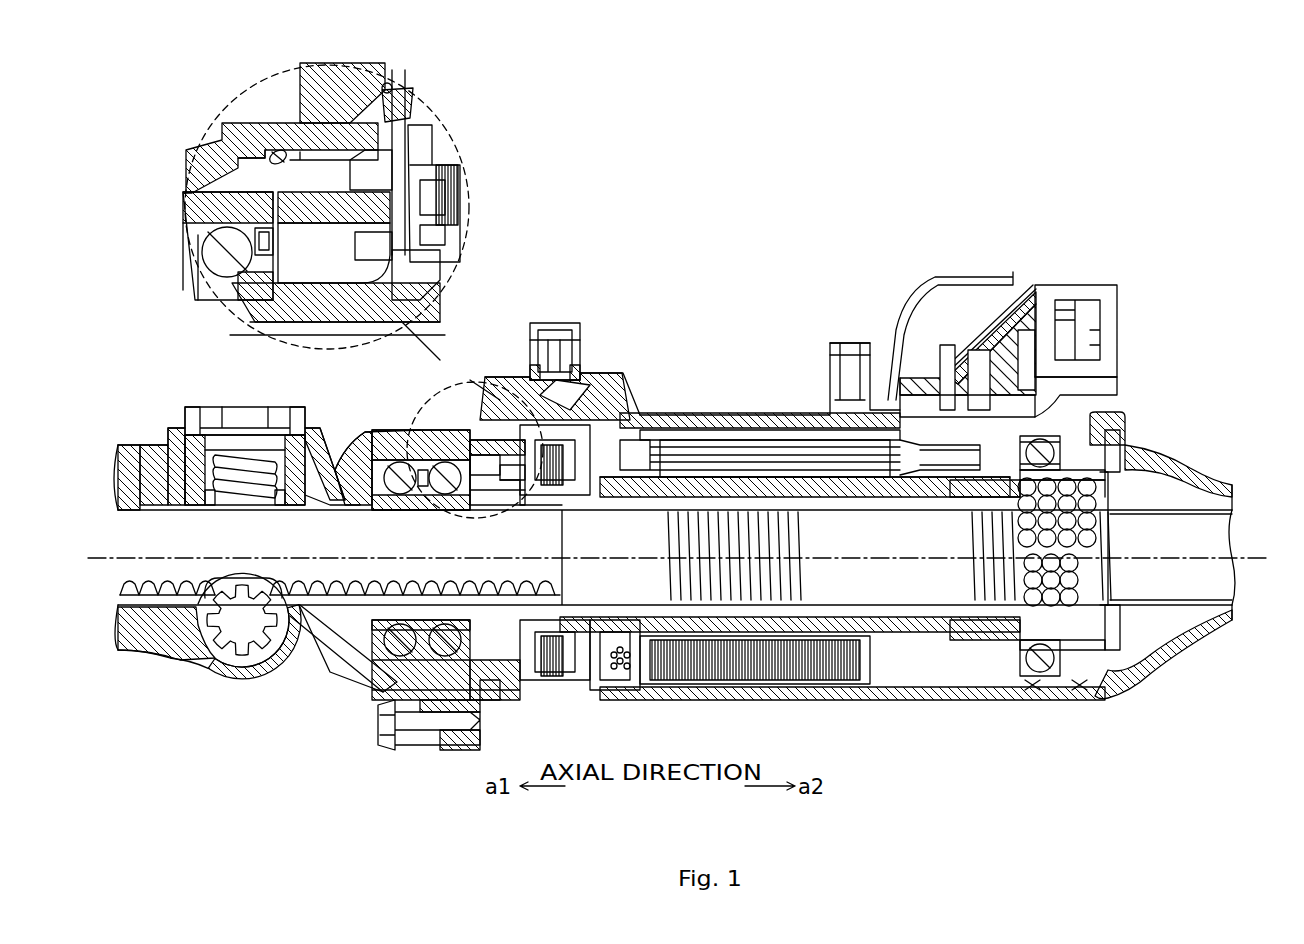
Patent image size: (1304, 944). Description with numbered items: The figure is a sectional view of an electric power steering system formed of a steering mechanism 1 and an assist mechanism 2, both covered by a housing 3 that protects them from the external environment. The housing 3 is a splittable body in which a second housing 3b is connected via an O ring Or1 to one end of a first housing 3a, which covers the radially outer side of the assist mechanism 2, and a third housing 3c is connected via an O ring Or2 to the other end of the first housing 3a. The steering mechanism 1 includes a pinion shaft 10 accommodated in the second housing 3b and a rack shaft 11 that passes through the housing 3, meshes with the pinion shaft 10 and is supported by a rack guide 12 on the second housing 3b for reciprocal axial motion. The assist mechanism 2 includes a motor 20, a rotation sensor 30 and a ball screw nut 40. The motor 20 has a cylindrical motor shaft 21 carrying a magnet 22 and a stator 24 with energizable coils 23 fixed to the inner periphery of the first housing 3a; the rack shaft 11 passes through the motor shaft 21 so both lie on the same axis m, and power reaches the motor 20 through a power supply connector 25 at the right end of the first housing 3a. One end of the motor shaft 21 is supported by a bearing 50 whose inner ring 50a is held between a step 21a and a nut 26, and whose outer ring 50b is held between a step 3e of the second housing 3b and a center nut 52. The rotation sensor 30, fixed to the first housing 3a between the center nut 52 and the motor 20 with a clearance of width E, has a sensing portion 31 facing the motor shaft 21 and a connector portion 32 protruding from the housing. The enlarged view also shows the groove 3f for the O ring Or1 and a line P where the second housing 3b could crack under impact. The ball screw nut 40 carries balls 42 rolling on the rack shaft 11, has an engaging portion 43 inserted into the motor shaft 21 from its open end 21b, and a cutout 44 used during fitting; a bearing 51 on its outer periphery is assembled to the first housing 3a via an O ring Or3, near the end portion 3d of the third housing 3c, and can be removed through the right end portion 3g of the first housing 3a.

The steering mechanism 1 is at (332, 711).
The assist mechanism 2 is at (590, 684).
The housing 3 is at (670, 708).
The first housing 3a is at (240, 130).
The second housing 3b is at (172, 648).
The third housing 3c is at (1185, 650).
The end portion of the third housing 3d is at (1070, 432).
The step 3e is at (338, 452).
The groove 3f is at (270, 160).
The right end portion of the first housing 3g is at (1100, 420).
The pinion shaft 10 is at (262, 660).
The rack shaft 11 is at (313, 650).
The rack guide 12 is at (240, 405).
The motor 20 is at (668, 412).
The motor shaft 21 is at (862, 497).
The step 21a is at (305, 226).
The open end 21b is at (1010, 545).
The magnet 22 is at (815, 497).
The coils 23 is at (770, 440).
The stator 24 is at (716, 428).
The power supply connector 25 is at (1075, 290).
The nut 26 is at (335, 500).
The rotation sensor 30 is at (405, 243).
The sensing portion 31 is at (430, 330).
The connector portion 32 is at (418, 102).
The ball screw nut 40 is at (1116, 500).
The balls 42 is at (1095, 540).
The engaging portion 43 is at (968, 500).
The cutout 44 is at (1105, 478).
The bearing 50 is at (182, 190).
The inner ring 50a is at (207, 280).
The outer ring 50b is at (190, 226).
The bearing 51 is at (1046, 433).
The center nut 52 is at (355, 225).
The O ring Or1 is at (278, 148).
The O ring Or2 is at (1078, 690).
The O ring Or3 is at (1032, 690).
The long dashed double-short dashed line P is at (295, 170).
The width of clearance E is at (410, 69).
The axis m is at (1250, 540).